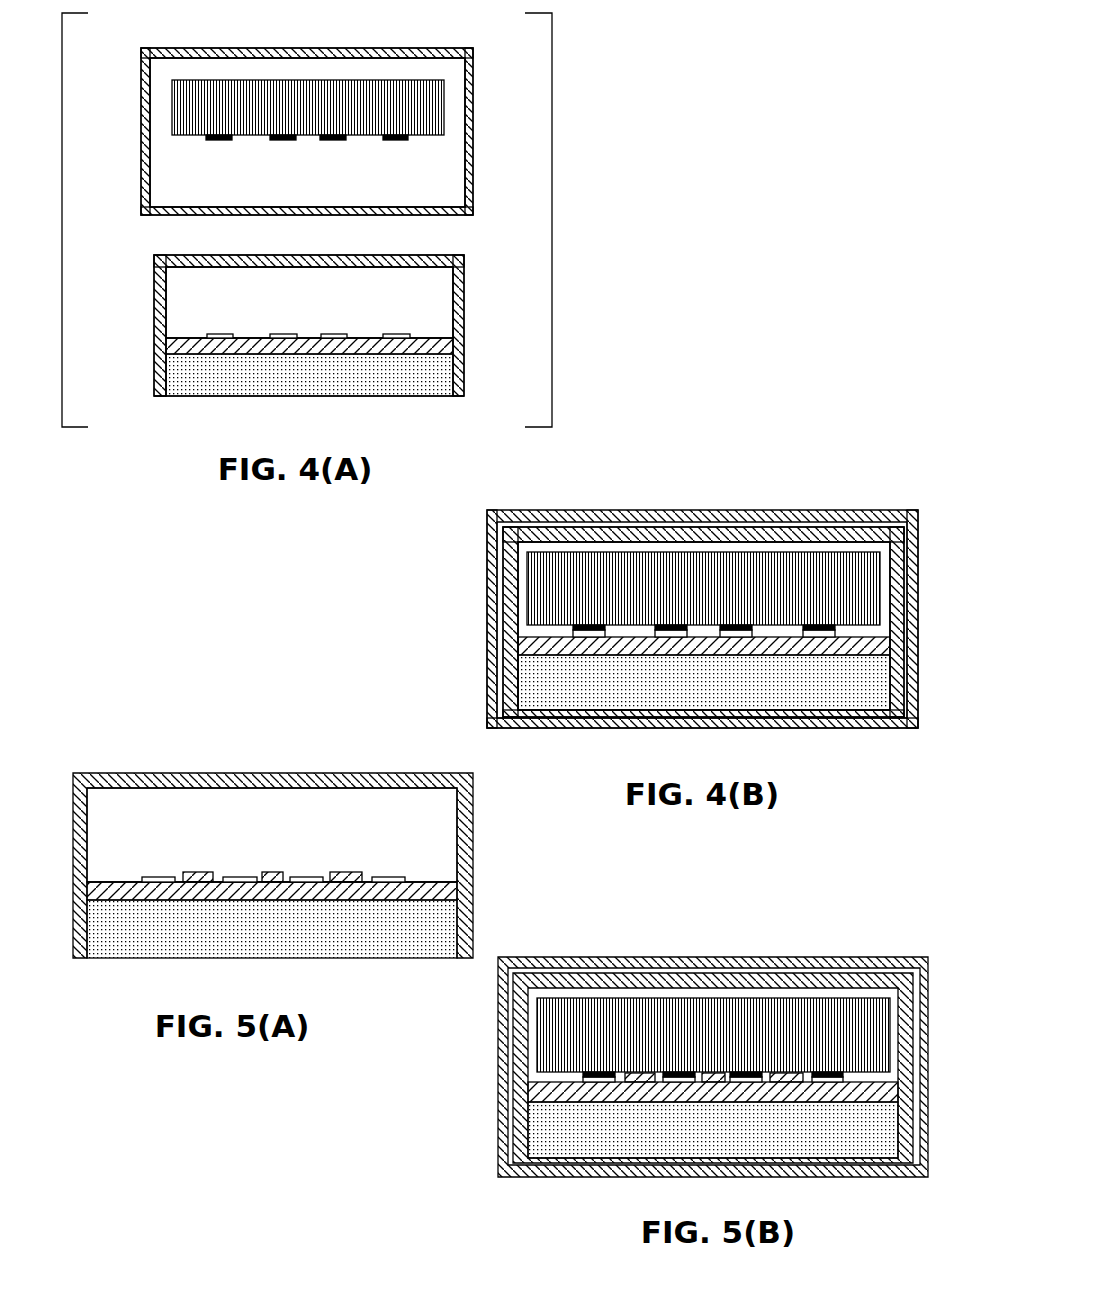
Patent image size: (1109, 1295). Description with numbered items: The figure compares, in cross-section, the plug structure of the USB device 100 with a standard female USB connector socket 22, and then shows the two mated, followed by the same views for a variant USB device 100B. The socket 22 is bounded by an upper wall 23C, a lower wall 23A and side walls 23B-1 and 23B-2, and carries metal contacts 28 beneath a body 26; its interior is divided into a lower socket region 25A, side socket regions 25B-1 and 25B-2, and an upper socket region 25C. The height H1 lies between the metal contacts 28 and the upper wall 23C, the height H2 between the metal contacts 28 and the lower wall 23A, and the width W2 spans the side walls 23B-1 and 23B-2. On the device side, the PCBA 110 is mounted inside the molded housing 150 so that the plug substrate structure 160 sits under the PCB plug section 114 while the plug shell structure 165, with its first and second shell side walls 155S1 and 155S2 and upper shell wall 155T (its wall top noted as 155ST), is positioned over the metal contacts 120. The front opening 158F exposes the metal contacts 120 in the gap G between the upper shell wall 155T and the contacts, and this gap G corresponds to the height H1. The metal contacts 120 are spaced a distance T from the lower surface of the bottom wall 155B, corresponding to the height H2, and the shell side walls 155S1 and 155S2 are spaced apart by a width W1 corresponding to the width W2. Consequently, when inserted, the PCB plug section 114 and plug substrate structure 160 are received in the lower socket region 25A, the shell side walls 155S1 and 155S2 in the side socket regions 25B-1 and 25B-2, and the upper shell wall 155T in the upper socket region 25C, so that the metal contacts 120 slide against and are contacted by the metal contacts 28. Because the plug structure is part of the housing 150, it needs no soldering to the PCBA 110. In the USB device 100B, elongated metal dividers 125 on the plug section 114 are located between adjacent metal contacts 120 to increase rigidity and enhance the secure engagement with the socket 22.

In FIG. 4A, the standard female USB connector socket 22 is at (166, 47).
In FIG. 4B, the standard female USB connector socket 22 is at (589, 510).
In FIG. 5B, the standard female USB connector socket 22 is at (646, 955).
In FIG. 4A, the lower wall 23A is at (268, 207).
In FIG. 4B, the lower wall 23A is at (673, 720).
In FIG. 4A, the side wall 23B-1 is at (141, 147).
In FIG. 4B, the side wall 23B-1 is at (488, 545).
In FIG. 4A, the side wall 23B-2 is at (484, 44).
In FIG. 4B, the side wall 23B-2 is at (919, 543).
In FIG. 4A, the upper wall 23C is at (390, 50).
In FIG. 4A, the lower socket region 25A is at (378, 192).
In FIG. 4B, the lower socket region 25A is at (750, 691).
In FIG. 5B, the lower socket region 25A is at (765, 1132).
In FIG. 4B, the side socket region 25B-1 is at (430, 622).
In FIG. 4B, the side socket region 25B-2 is at (828, 577).
In FIG. 4B, the upper socket region 25C is at (703, 502).
In FIG. 4A, the semiconductor die 26 is at (232, 88).
In FIG. 4B, the semiconductor die 26 is at (664, 557).
In FIG. 4A, the metal contacts 28 is at (338, 141).
In FIG. 4B, the metal contacts 28 is at (815, 630).
In FIG. 5B, the metal contacts 28 is at (823, 1070).
In FIG. 4B, the USB device 100 is at (526, 629).
In FIG. 5A, the USB device 100B is at (266, 856).
In FIG. 5B, the USB device 100B is at (620, 970).
In FIG. 4A, the PCBA 110 is at (202, 333).
In FIG. 4B, the PCBA 110 is at (704, 646).
In FIG. 5A, the PCBA 110 is at (126, 880).
In FIG. 5B, the PCBA 110 is at (713, 1092).
In FIG. 4A, the PCB plug section 114 is at (428, 338).
In FIG. 5A, the PCB plug section 114 is at (427, 882).
In FIG. 4A, the metal contacts 120 is at (333, 334).
In FIG. 4B, the metal contacts 120 is at (812, 637).
In FIG. 5A, the metal contacts 120 is at (378, 883).
In FIG. 5B, the metal contacts 120 is at (823, 1083).
In FIG. 5A, the elongated metal dividers 125 is at (343, 872).
In FIG. 5B, the elongated metal dividers 125 is at (787, 1083).
In FIG. 4A, the housing 150 is at (310, 342).
In FIG. 4A, the upper shell wall 155T is at (453, 256).
In FIG. 4B, the upper shell wall 155T is at (650, 537).
In FIG. 4A, the bottom wall 155B is at (323, 396).
In FIG. 4B, the bottom wall 155B is at (628, 710).
In FIG. 4A, the first shell side wall 155S1 is at (155, 308).
In FIG. 4B, the first shell side wall 155S1 is at (512, 582).
In FIG. 4B, the second shell side wall 155S2 is at (897, 578).
In FIG. 4A, the carrier side wall top 155ST is at (464, 313).
In FIG. 4A, the front opening 158F is at (228, 293).
In FIG. 5A, the front opening 158F is at (208, 842).
In FIG. 4A, the plug substrate structure 160 is at (280, 382).
In FIG. 4B, the plug substrate structure 160 is at (704, 682).
In FIG. 5A, the plug substrate structure 160 is at (262, 937).
In FIG. 5B, the plug substrate structure 160 is at (713, 1130).
In FIG. 4A, the plug shell structure 165 is at (152, 288).
In FIG. 4B, the plug shell structure 165 is at (503, 675).
In FIG. 5A, the plug shell structure 165 is at (269, 773).
In FIG. 4A, the height H1 is at (454, 58).
In FIG. 4A, the height H2 is at (220, 207).
In FIG. 4A, the width W1 is at (464, 427).
In FIG. 4A, the width W2 is at (465, 230).
In FIG. 4A, the gap G is at (440, 338).
In FIG. 4A, the distance T is at (466, 338).